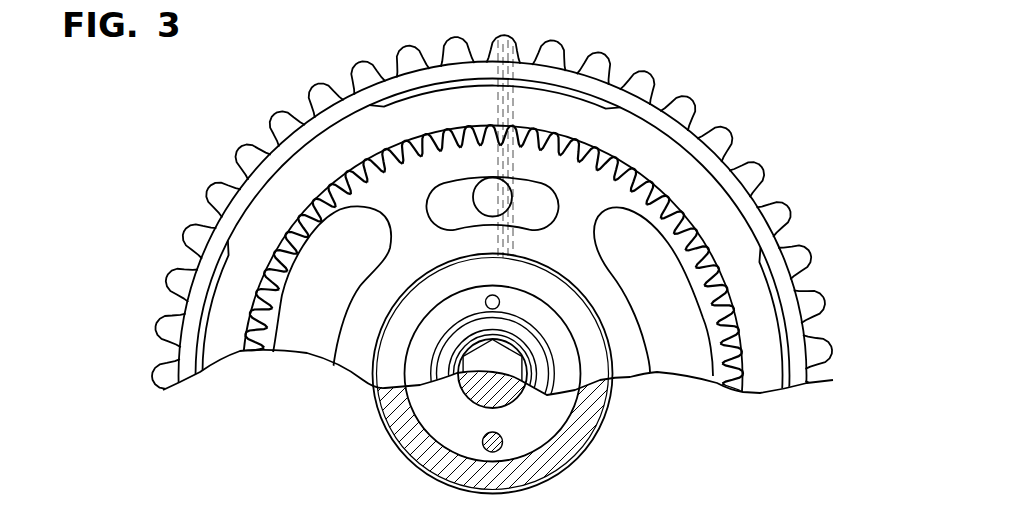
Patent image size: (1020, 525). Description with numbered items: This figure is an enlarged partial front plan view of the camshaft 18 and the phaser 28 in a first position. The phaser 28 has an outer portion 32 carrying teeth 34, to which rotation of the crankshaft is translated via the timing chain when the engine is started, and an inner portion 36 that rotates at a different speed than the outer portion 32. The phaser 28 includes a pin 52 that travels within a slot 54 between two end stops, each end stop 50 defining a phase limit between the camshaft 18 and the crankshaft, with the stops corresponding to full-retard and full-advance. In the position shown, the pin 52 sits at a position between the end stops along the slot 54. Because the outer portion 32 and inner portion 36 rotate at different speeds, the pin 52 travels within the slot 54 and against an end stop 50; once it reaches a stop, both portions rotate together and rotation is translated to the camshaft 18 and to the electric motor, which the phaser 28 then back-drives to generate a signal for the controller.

The camshaft 18 is at (600, 441).
The phaser 28 is at (183, 196).
The outer portion 32 is at (571, 180).
The teeth 34 is at (692, 111).
The inner portion 36 is at (525, 196).
The end stop 50 is at (570, 208).
The pin 52 is at (500, 193).
The slot 54 is at (452, 176).